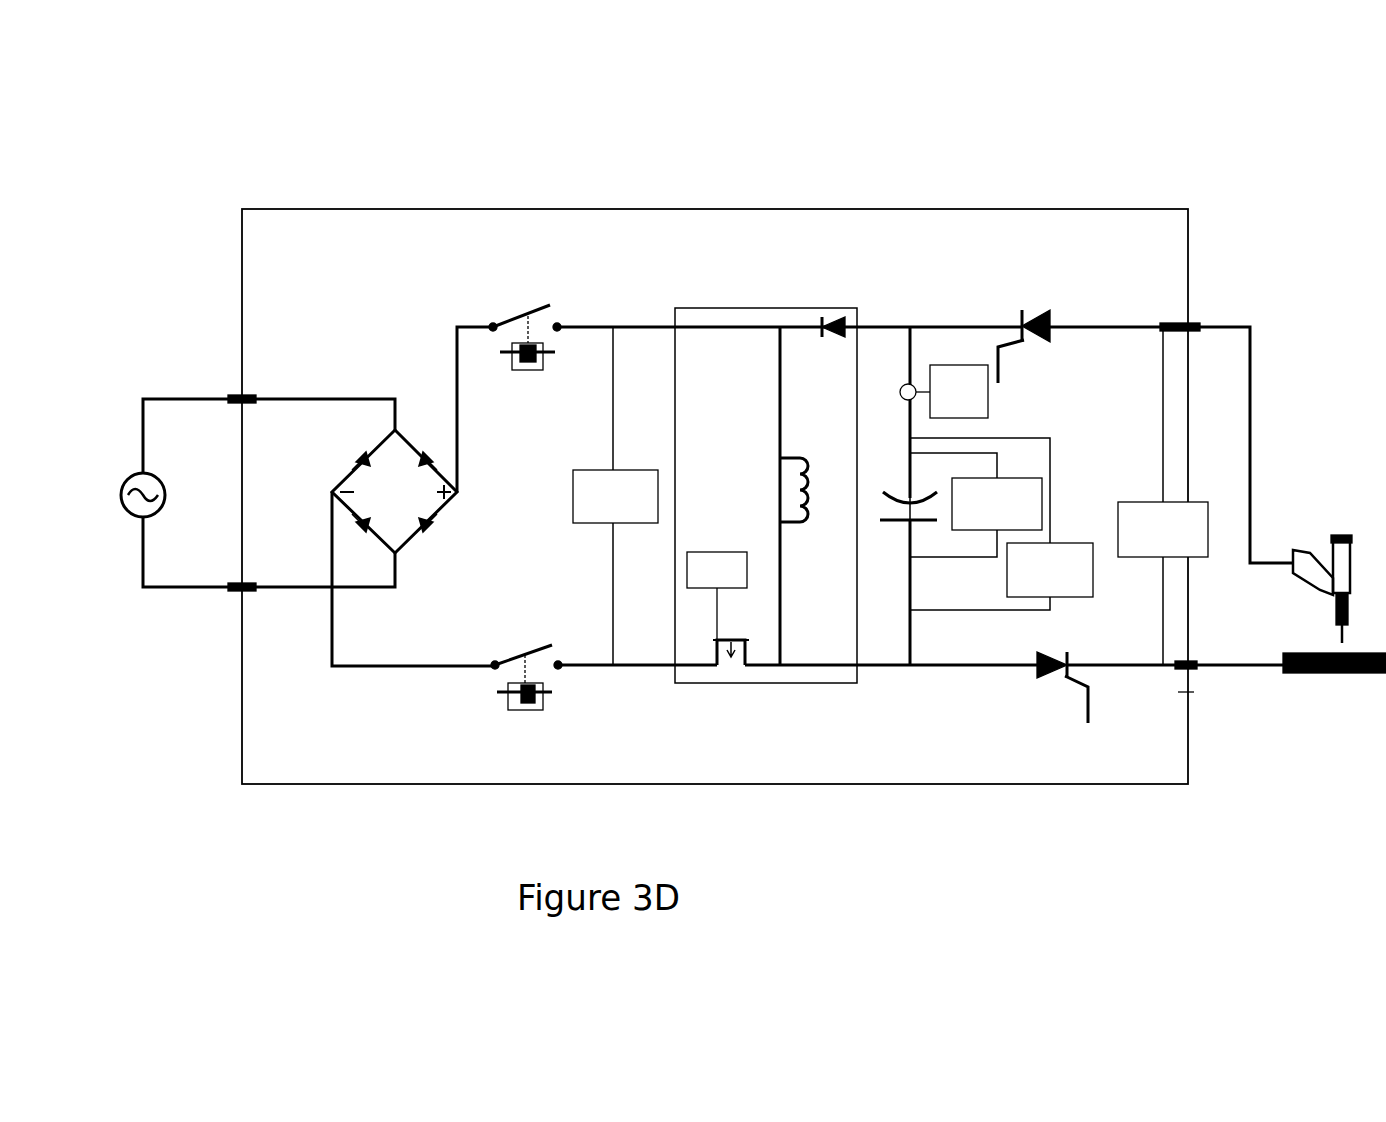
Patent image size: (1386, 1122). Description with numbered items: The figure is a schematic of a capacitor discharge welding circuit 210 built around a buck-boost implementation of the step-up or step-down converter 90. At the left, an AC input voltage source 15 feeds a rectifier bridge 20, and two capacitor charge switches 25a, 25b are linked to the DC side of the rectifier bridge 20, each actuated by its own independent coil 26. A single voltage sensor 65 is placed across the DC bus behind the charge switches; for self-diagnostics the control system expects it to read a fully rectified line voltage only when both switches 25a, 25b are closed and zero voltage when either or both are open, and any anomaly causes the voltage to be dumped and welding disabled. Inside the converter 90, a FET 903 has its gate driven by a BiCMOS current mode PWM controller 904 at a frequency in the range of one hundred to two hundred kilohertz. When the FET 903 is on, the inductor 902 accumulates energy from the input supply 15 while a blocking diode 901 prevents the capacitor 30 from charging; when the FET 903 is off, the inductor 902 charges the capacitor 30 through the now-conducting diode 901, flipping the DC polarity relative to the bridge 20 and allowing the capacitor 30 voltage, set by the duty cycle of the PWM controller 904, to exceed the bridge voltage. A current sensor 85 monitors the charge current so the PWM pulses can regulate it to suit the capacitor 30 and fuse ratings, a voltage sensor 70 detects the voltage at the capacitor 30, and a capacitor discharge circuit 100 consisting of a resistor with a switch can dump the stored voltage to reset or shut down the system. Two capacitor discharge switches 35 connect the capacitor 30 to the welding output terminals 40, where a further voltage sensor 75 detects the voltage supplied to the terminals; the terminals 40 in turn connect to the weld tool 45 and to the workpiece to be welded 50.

The capacitor discharge welding circuit 210 is at (580, 183).
The input voltage source 15 is at (113, 517).
The rectifier bridge 20 is at (412, 432).
The capacitor charge switch 25a is at (500, 330).
The capacitor charge switch 25b is at (495, 668).
The coil 26 is at (545, 355).
The voltage sensor 65 is at (580, 466).
The step-up or step-down converter 90 is at (773, 305).
The blocking diode 901 is at (822, 340).
The inductor 902 is at (785, 475).
The FET 903 is at (730, 672).
The PWM controller 904 is at (740, 548).
The capacitor 30 is at (888, 532).
The current sensor 85 is at (993, 400).
The voltage sensor 70 is at (1002, 478).
The capacitor discharge circuit 100 is at (1075, 532).
The voltage sensor 75 is at (1150, 565).
The capacitor discharge switch 35 is at (1035, 308).
The welding output terminal 40 is at (1190, 312).
The weld tool 45 is at (1335, 535).
The workpiece to be welded 50 is at (1323, 680).